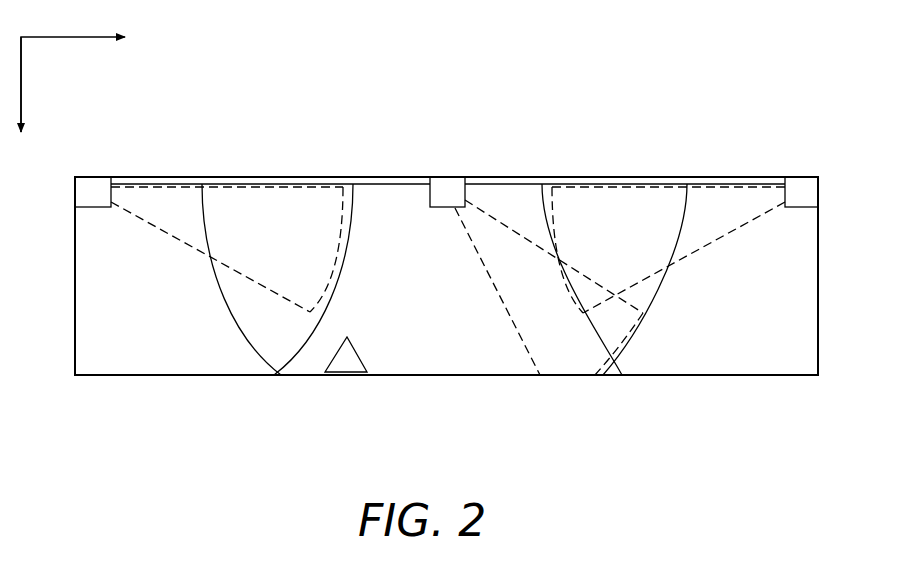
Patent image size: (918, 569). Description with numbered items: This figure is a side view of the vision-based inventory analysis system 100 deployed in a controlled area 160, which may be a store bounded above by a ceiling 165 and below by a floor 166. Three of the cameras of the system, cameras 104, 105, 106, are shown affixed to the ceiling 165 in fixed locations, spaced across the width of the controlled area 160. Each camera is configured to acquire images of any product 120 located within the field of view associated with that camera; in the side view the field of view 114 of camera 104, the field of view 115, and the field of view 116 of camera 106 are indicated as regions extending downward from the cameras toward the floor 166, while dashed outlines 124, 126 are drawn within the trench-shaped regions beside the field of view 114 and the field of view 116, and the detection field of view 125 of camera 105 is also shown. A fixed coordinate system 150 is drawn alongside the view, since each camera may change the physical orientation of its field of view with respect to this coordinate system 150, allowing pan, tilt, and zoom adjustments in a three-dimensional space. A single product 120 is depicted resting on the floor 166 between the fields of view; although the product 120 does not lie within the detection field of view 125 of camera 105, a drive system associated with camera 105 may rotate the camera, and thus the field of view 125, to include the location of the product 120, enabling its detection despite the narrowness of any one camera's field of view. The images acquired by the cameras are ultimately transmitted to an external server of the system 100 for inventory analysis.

The vision-based inventory analysis system 100 is at (814, 132).
The camera 104 is at (105, 208).
The camera 105 is at (438, 208).
The camera 106 is at (795, 208).
The field of view 114 is at (182, 347).
The field of view 115 is at (481, 356).
The field of view 116 is at (789, 357).
The product 120 is at (347, 338).
The first doped region 124 is at (197, 216).
The detection field of view 125 is at (584, 356).
The second doped region 126 is at (646, 252).
The fixed coordinate system 150 is at (54, 64).
The controlled area 160 is at (380, 177).
The ceiling 165 is at (502, 177).
The floor 166 is at (567, 376).